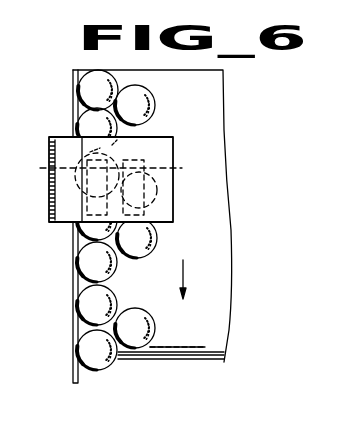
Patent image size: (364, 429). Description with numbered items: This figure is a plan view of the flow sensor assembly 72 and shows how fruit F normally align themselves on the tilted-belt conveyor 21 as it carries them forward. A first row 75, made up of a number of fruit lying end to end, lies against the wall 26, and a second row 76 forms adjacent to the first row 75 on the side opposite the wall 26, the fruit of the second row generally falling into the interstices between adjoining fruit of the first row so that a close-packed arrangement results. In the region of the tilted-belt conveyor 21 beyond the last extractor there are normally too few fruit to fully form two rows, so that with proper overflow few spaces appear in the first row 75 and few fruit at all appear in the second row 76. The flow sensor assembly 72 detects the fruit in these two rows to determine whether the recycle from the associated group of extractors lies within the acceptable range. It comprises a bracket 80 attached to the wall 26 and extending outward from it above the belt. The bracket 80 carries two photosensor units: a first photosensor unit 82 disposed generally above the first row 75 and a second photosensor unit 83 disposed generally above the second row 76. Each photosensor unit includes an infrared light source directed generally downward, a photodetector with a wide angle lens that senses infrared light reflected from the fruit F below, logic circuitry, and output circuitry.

The tilted-belt conveyor 21 is at (218, 327).
The wall 26 is at (73, 274).
The flow sensor assembly 72 is at (182, 145).
The first row 75 is at (93, 382).
The second row 76 is at (137, 358).
The bracket 80 is at (157, 135).
The first photosensor unit 82 is at (50, 168).
The second photosensor unit 83 is at (143, 180).
The fruit F is at (90, 118).